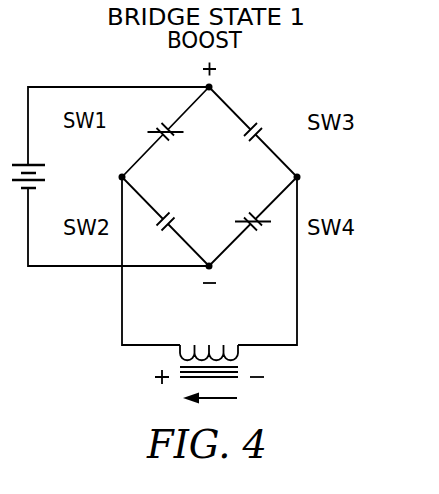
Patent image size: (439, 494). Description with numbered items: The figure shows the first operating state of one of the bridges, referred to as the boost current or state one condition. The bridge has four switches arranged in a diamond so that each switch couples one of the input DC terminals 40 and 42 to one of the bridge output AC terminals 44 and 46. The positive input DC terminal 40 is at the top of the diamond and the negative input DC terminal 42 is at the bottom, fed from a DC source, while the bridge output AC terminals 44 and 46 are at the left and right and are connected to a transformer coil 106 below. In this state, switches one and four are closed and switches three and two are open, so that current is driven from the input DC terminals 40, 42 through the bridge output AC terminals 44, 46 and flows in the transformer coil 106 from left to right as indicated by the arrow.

The input DC terminal 40 is at (225, 89).
The input DC terminal 42 is at (217, 267).
The bridge output AC terminal 44 is at (118, 171).
The bridge output AC terminal 46 is at (303, 182).
The transformer coil 106 is at (206, 340).